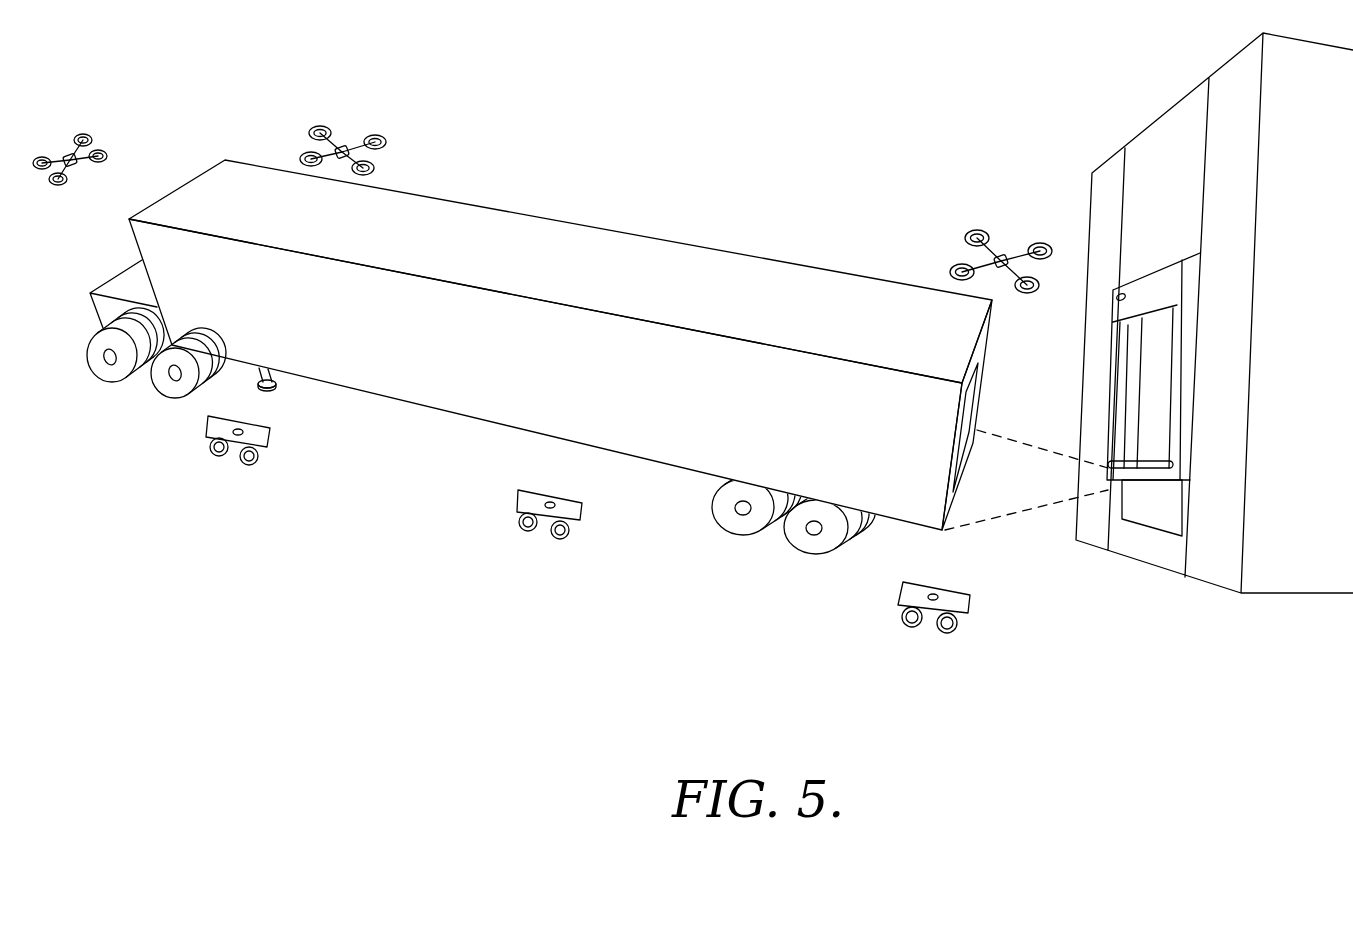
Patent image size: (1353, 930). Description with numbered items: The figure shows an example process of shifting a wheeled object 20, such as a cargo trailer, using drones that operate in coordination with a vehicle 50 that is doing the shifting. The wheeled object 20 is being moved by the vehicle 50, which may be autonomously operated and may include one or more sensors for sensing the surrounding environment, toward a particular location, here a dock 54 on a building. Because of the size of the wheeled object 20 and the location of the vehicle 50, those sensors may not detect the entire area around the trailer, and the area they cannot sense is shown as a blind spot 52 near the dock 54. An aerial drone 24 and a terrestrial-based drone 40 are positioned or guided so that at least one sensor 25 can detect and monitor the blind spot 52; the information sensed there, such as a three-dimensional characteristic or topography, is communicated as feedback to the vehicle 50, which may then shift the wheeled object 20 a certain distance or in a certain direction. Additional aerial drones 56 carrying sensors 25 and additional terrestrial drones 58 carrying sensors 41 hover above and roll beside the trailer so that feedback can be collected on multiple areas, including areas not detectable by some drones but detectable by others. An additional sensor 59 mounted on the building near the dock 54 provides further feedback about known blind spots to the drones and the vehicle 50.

The wheeled object 20 is at (468, 392).
The aerial drone 24 is at (1003, 262).
The sensor 25 is at (75, 165).
The terrestrial-based drone 40 is at (965, 607).
The sensor 41 is at (238, 430).
The vehicle 50 is at (123, 367).
The blind spot 52 is at (1140, 464).
The dock 54 is at (1140, 483).
The aerial drones 56 is at (70, 157).
The terrestrial drones 58 is at (262, 440).
The additional sensor 59 is at (1127, 297).